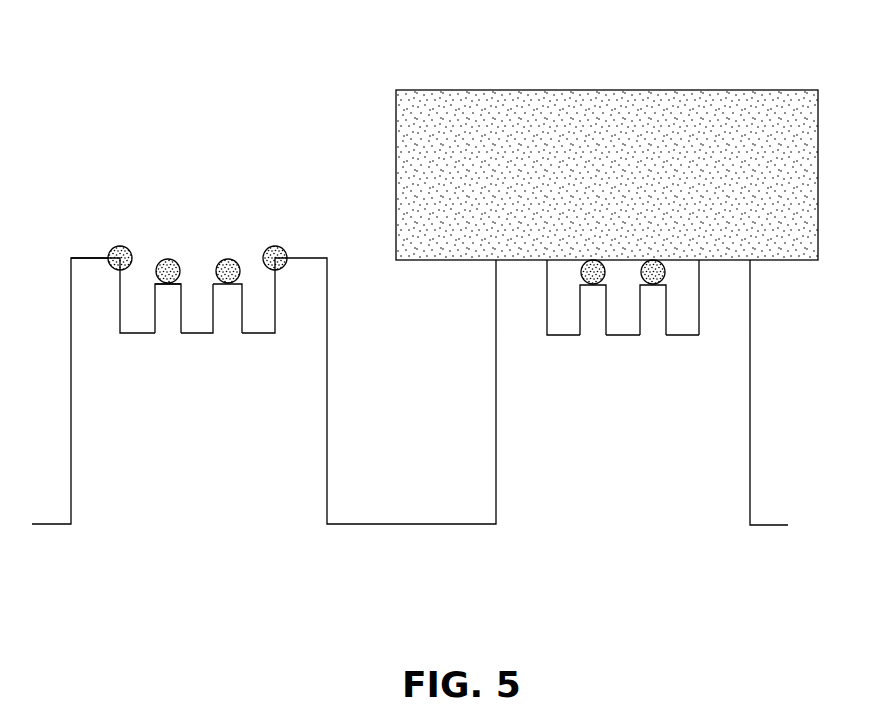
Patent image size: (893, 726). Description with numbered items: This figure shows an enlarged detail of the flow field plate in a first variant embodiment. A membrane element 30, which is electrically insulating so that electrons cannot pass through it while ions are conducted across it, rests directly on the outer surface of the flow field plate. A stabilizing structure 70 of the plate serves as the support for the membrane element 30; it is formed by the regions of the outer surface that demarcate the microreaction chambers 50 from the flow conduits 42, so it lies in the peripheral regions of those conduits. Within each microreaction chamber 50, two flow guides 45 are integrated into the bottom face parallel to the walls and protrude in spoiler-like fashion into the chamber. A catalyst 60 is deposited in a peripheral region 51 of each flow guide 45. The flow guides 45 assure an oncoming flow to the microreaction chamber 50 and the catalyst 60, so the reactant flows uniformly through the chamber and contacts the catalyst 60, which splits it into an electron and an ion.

The membrane element 30 is at (750, 102).
The flow conduit 42 is at (418, 495).
The flow guide 45 is at (172, 313).
The microreaction chamber 50 is at (198, 298).
The peripheral region 51 is at (152, 269).
The catalyst 60 is at (232, 262).
The stabilizing structure 70 is at (90, 246).